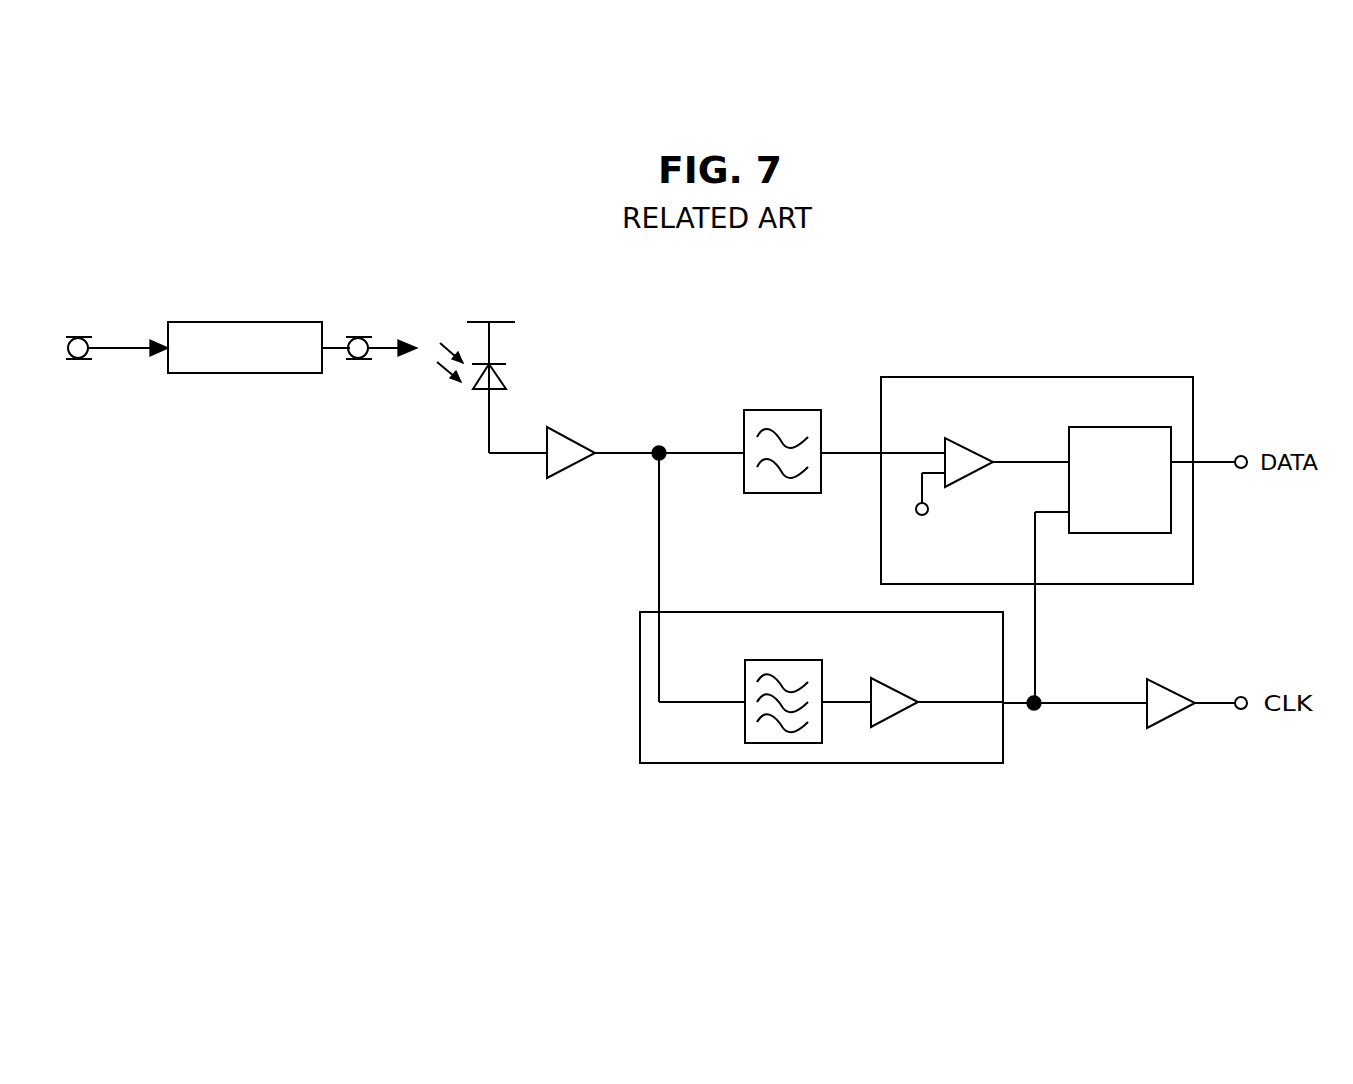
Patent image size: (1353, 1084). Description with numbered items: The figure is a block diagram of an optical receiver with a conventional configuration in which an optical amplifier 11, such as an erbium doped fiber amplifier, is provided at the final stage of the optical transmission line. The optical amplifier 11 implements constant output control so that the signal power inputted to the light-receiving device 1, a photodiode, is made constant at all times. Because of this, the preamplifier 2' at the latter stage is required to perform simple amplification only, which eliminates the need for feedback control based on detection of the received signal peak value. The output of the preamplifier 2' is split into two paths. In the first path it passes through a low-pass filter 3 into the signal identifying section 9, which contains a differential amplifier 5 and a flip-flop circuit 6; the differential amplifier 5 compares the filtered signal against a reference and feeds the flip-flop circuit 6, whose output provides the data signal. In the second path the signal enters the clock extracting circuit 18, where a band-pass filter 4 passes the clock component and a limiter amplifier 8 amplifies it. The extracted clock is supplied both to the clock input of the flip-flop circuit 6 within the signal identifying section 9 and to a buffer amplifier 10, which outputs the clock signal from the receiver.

The light-receiving device 1 is at (498, 372).
The preamplifier 2' is at (563, 479).
The low-pass filter 3 is at (783, 410).
The band-pass filter 4 is at (780, 660).
The differential amplifier 5 is at (968, 445).
The flip-flop circuit 6 is at (1110, 427).
The limiter amplifier 8 is at (897, 687).
The signal identifying section 9 is at (1038, 377).
The buffer amplifier 10 is at (1173, 689).
The optical amplifier 11 is at (248, 322).
The clock extracting circuit 18 is at (823, 763).